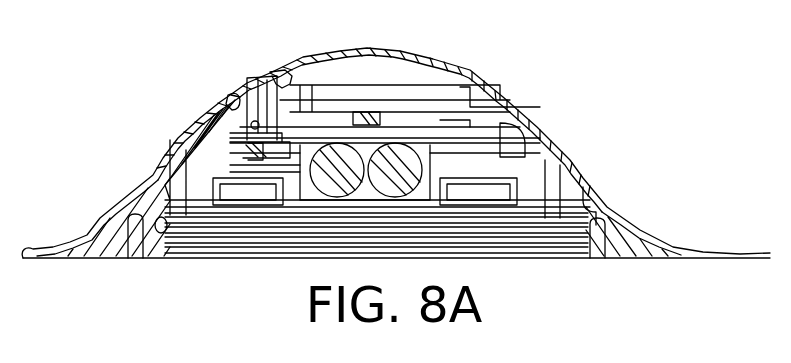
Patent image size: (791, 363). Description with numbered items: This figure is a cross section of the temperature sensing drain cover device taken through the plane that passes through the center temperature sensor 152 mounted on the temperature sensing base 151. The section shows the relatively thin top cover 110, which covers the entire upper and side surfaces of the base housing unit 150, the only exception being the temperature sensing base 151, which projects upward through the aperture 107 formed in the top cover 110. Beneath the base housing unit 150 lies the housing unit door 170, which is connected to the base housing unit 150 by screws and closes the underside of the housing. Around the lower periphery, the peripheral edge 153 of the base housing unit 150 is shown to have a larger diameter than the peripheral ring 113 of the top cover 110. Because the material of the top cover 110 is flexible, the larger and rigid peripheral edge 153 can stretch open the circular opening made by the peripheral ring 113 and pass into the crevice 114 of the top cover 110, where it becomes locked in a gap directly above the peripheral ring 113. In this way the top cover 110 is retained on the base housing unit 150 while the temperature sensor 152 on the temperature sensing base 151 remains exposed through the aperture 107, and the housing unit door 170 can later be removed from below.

The aperture 107 is at (230, 96).
The top cover 110 is at (152, 165).
The peripheral ring 113 is at (153, 236).
The crevice 114 is at (594, 240).
The base housing unit 150 is at (440, 66).
The temperature sensing base 151 is at (270, 72).
The temperature sensor 152 is at (250, 78).
The peripheral edge 153 is at (163, 231).
The housing unit door 170 is at (262, 242).